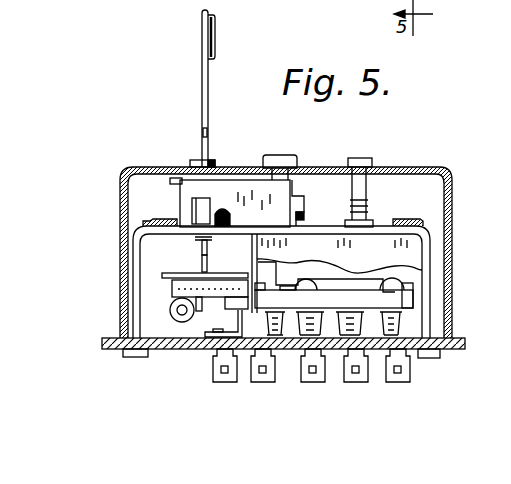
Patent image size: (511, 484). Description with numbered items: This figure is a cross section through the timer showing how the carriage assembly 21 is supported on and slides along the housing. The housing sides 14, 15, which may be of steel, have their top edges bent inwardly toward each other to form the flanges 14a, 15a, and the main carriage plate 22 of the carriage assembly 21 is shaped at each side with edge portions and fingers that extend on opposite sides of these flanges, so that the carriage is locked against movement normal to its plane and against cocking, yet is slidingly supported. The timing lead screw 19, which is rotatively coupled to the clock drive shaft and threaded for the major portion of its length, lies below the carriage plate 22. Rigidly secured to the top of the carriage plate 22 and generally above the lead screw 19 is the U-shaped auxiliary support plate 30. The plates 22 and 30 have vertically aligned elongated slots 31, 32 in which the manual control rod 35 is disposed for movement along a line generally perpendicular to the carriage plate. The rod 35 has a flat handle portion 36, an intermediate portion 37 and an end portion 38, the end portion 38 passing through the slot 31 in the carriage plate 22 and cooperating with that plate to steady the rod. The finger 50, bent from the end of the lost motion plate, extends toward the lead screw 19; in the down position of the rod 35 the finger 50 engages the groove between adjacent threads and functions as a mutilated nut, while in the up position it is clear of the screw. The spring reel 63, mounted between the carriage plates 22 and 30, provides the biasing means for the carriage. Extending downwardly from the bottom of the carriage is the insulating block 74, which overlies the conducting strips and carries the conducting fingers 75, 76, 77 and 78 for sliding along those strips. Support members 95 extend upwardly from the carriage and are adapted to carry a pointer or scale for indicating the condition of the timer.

The flat handle portion 36 is at (200, 40).
The manual control rod 35 is at (196, 95).
The intermediate portion 37 is at (200, 148).
The elongated slot 32 is at (211, 162).
The U-shaped auxiliary support plate 30 is at (237, 187).
The support members 95 is at (357, 160).
The housing flange 15a is at (152, 222).
The carriage assembly 21 is at (230, 202).
The spring reel 63 is at (306, 188).
The main carriage plate 22 is at (303, 226).
The housing flange 14a is at (408, 222).
The housing side 15 is at (120, 262).
The end portion 38 is at (202, 263).
The elongated slot 31 is at (208, 250).
The housing side 14 is at (432, 268).
The insulating block 74 is at (407, 295).
The finger 50 is at (172, 298).
The timing lead screw 19 is at (182, 322).
The conducting finger 75 is at (258, 322).
The conducting finger 76 is at (296, 322).
The conducting finger 77 is at (338, 322).
The conducting finger 78 is at (382, 322).